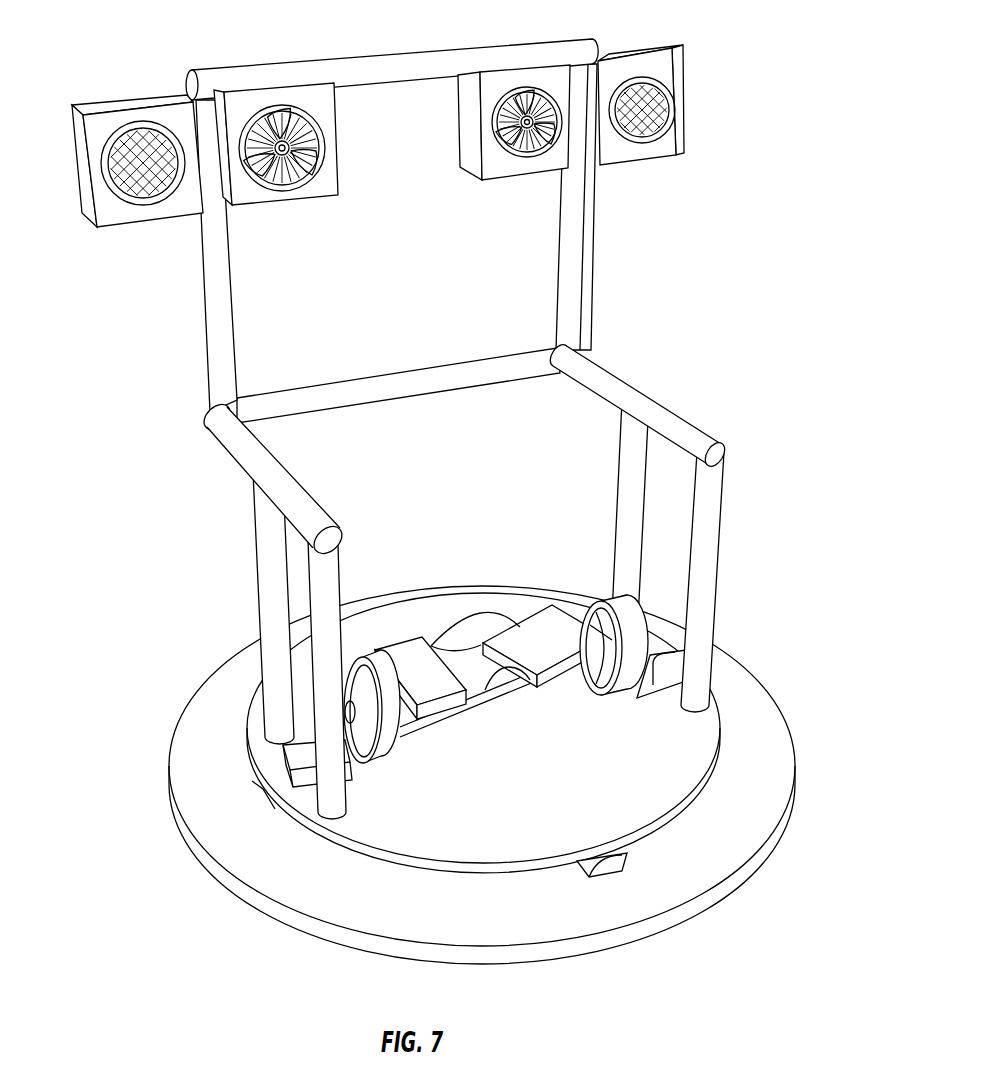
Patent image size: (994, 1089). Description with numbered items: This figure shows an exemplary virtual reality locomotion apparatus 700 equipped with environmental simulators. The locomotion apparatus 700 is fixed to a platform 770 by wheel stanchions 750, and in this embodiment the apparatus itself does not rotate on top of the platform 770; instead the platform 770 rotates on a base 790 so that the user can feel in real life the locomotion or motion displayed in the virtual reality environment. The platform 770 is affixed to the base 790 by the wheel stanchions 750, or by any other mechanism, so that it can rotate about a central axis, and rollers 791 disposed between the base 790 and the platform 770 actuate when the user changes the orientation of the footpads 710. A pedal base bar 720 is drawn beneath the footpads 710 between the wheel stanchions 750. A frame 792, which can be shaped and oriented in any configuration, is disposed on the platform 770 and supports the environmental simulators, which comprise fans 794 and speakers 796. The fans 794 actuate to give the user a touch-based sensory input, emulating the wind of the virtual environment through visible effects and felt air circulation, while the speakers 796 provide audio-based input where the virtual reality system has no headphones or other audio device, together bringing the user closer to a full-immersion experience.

The locomotion apparatus 700 is at (432, 487).
The footpads 710 is at (518, 624).
The pedal base bar 720 is at (426, 727).
The wheel stanchions 750 is at (358, 658).
The platform 770 is at (672, 723).
The base 790 is at (760, 772).
The rollers 791 is at (606, 867).
The frame 792 is at (679, 423).
The fans 794 is at (297, 100).
The speakers 796 is at (112, 122).